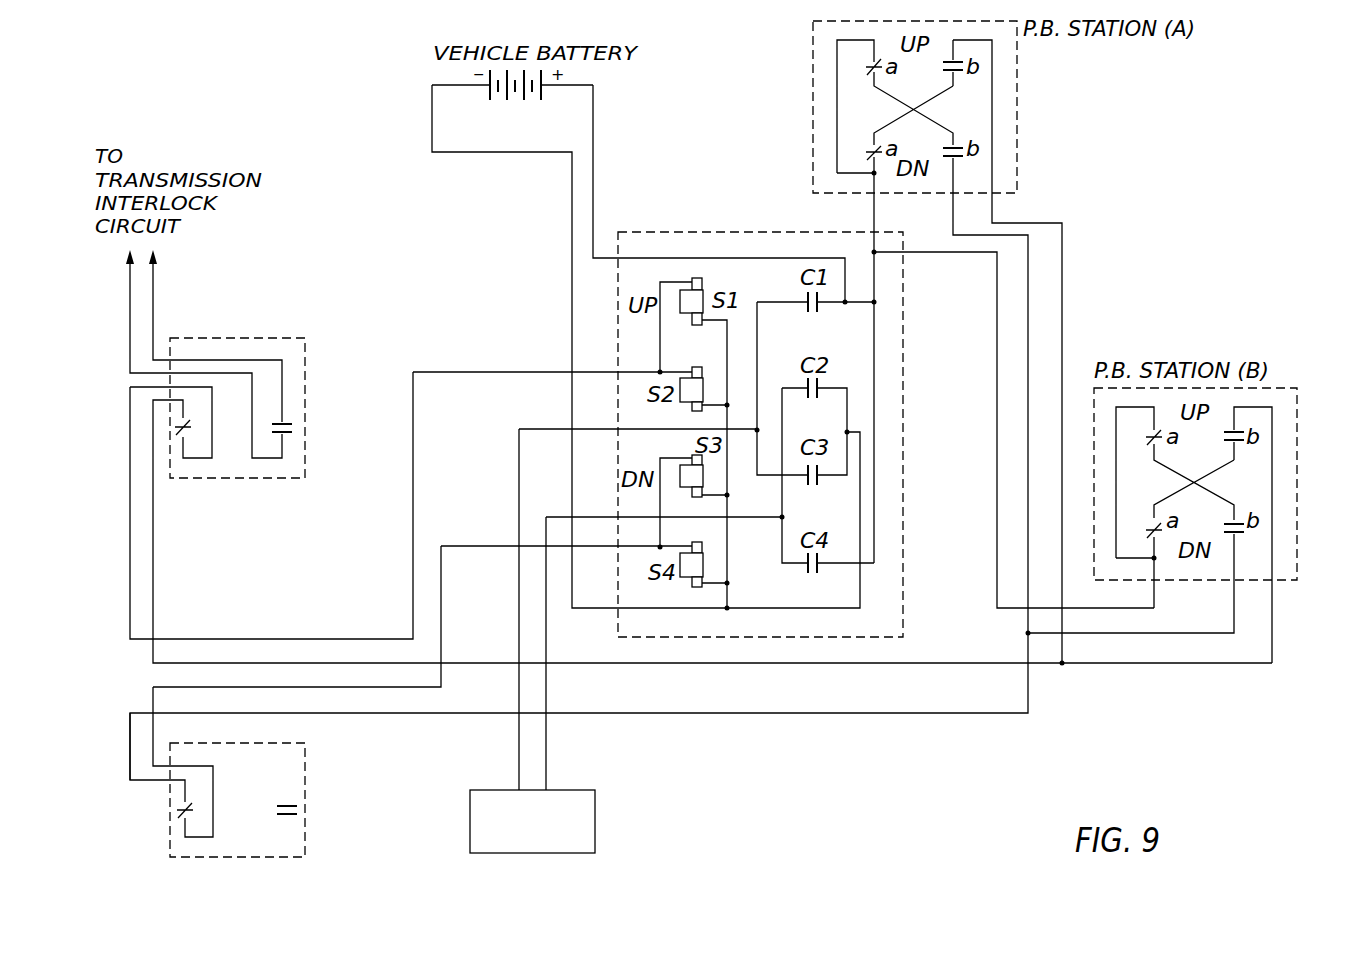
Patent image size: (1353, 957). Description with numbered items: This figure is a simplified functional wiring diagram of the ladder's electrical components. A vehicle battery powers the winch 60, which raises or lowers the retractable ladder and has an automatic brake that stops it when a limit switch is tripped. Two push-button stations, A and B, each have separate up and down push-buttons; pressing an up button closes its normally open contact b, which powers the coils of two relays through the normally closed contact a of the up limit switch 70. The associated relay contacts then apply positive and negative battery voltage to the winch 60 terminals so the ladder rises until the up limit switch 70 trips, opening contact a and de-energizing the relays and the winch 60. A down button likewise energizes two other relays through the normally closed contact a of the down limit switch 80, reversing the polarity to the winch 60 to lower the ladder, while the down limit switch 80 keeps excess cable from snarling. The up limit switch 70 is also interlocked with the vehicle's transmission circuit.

The up limit switch 70 is at (305, 437).
The down limit switch 80 is at (305, 835).
The winch 60 is at (595, 828).